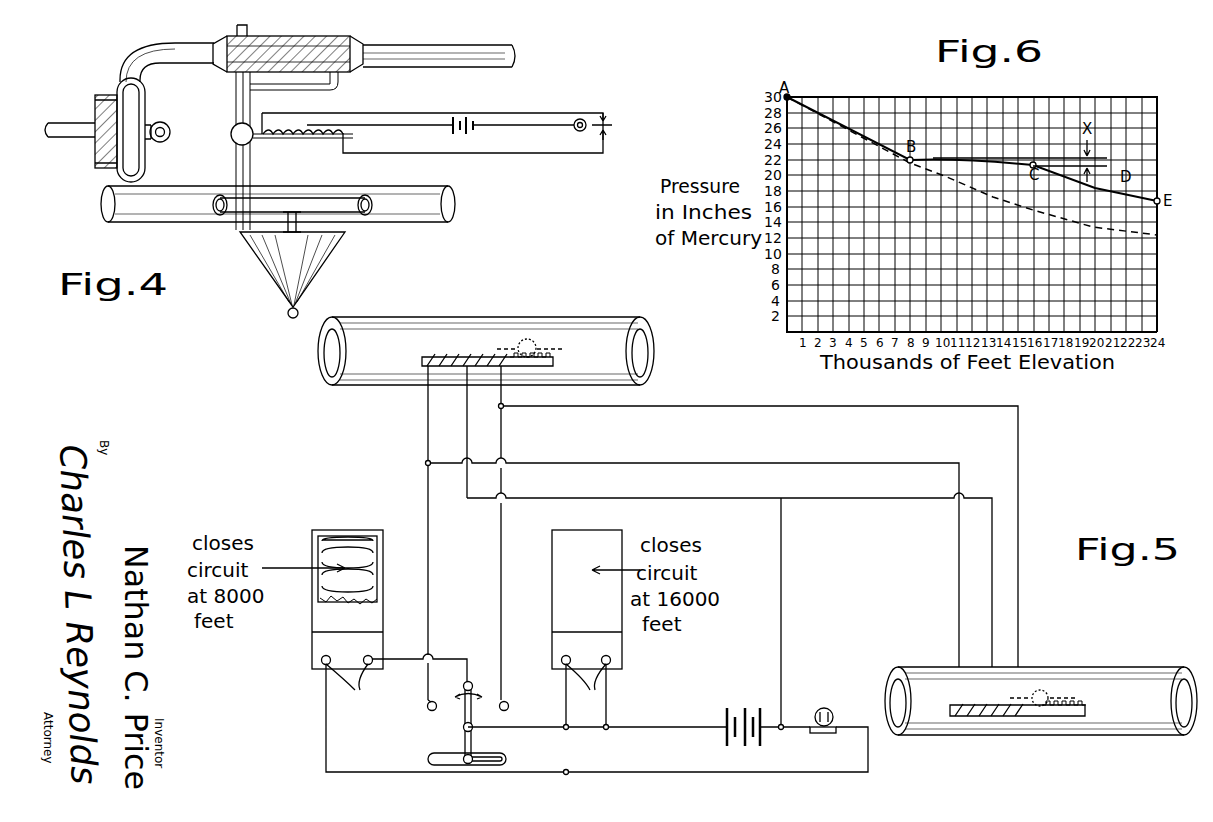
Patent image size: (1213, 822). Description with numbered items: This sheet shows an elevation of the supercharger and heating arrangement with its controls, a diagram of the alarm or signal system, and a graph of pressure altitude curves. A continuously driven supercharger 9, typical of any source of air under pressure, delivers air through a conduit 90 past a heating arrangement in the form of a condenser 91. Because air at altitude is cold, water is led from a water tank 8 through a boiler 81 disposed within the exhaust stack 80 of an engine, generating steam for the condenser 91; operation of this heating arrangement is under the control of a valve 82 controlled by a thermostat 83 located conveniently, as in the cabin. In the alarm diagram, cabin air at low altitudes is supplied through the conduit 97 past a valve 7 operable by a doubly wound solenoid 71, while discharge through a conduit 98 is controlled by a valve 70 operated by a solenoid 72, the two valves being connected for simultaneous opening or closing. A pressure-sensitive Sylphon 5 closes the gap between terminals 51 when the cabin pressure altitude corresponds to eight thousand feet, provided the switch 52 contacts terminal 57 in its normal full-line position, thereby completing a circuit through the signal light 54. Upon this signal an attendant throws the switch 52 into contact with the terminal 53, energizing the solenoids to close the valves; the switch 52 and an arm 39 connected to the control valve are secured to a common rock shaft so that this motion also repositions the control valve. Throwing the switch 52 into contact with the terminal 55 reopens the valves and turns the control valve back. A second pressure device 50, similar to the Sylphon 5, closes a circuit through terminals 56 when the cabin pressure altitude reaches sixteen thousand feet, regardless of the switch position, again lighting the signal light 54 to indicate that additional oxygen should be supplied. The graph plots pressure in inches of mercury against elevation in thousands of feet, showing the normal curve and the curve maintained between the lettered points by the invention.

In FIG. 4, the supercharger 9 is at (128, 96).
In FIG. 4, the condenser 91 is at (320, 42).
In FIG. 4, the conduit 90 is at (445, 55).
In FIG. 4, the thermostat 83 is at (604, 112).
In FIG. 4, the valve 82 is at (231, 138).
In FIG. 4, the boiler 81 is at (271, 208).
In FIG. 4, the water tank 8 is at (310, 268).
In FIG. 4, the exhaust stack 80 is at (410, 208).
In FIG. 5, the conduit 97 is at (368, 368).
In FIG. 5, the solenoid 71 is at (436, 356).
In FIG. 5, the valve 7 is at (555, 347).
In FIG. 5, the pressure-sensitive Sylphon 5 is at (355, 548).
In FIG. 5, the second pressure device 50 is at (570, 560).
In FIG. 5, the terminal 57 is at (469, 684).
In FIG. 5, the terminal 53 is at (427, 704).
In FIG. 5, the terminal 55 is at (508, 704).
In FIG. 5, the switch 52 is at (462, 720).
In FIG. 5, the terminals 51 is at (349, 681).
In FIG. 5, the terminals 56 is at (586, 684).
In FIG. 5, the arm 39 is at (428, 757).
In FIG. 5, the signal light 54 is at (826, 706).
In FIG. 5, the valve 70 is at (1062, 690).
In FIG. 5, the conduit 98 is at (1160, 680).
In FIG. 5, the solenoid 72 is at (993, 717).